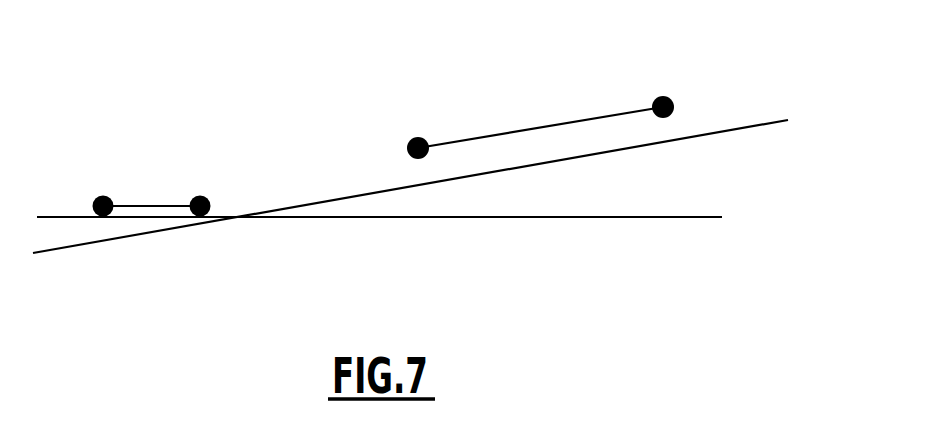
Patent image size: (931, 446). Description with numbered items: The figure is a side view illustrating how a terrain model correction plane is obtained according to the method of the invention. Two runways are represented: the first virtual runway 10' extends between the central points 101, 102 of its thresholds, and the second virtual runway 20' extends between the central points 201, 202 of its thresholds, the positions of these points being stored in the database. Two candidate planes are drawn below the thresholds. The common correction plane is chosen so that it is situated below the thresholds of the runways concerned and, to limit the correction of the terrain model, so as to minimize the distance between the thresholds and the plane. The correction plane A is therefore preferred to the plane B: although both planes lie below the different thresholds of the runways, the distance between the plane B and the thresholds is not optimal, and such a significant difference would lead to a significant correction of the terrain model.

The correction plane A is at (705, 137).
The plane B is at (658, 218).
The virtual runway 10' is at (151, 149).
The central point of threshold of first runway 101 is at (107, 192).
The central point of threshold of first runway 102 is at (198, 192).
The virtual runway 20' is at (540, 86).
The central point of threshold of second runway 201 is at (422, 135).
The central point of threshold of second runway 202 is at (663, 95).